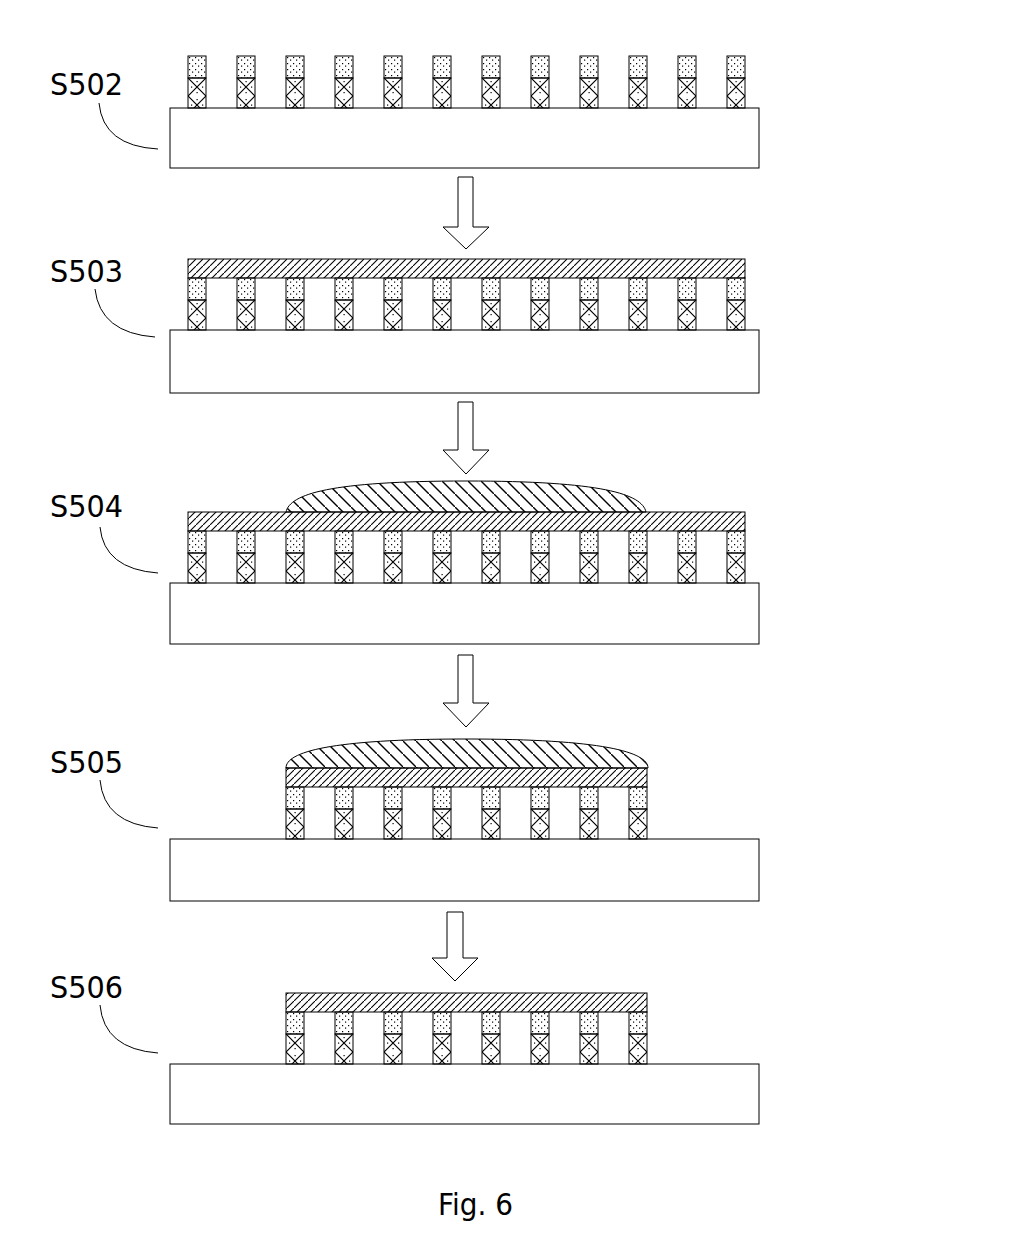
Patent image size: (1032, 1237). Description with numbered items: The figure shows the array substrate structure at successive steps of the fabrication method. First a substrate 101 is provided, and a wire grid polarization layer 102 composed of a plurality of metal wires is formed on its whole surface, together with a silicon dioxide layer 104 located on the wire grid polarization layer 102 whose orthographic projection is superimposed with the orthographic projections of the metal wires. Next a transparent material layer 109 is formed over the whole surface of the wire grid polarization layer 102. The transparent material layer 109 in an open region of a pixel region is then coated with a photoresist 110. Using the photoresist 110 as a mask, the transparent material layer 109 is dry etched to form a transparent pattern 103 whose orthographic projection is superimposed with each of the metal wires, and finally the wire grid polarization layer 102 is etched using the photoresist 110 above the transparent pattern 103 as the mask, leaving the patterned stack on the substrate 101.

The substrate 101 is at (759, 139).
The wire grid polarization layer 102 is at (745, 92).
The silicon dioxide layer 104 is at (745, 64).
The transparent material layer 109 is at (745, 268).
The transparent pattern 103 is at (647, 780).
The photoresist 110 is at (598, 491).